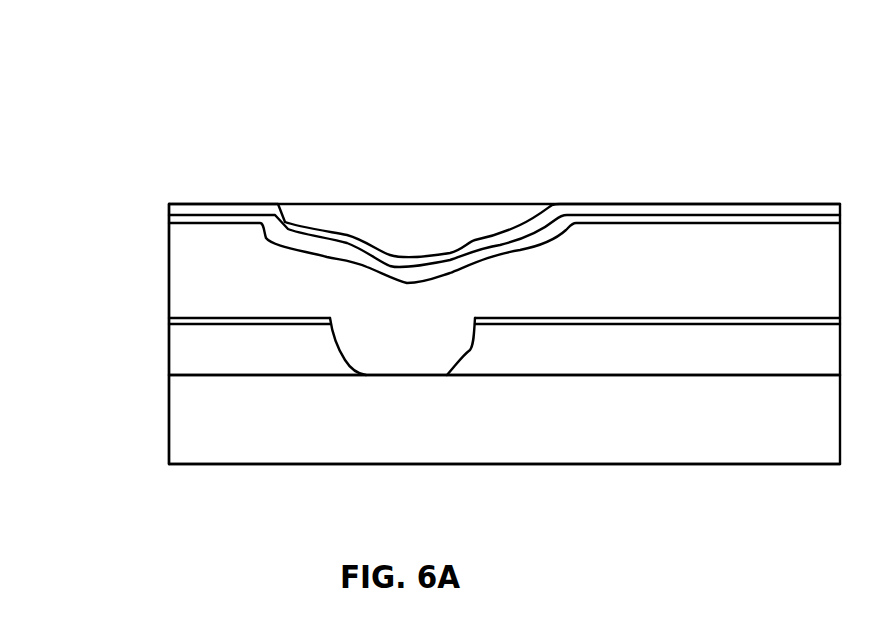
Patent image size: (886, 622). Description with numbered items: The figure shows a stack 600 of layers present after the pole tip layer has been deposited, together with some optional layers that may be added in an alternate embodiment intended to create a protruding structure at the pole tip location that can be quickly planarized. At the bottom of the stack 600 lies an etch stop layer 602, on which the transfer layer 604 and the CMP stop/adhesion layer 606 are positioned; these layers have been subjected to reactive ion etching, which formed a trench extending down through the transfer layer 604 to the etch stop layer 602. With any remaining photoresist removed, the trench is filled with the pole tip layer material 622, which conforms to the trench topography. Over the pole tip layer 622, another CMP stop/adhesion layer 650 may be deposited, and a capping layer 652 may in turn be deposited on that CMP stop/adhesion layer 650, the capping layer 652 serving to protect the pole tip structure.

The stack 600 is at (700, 148).
The etch stop layer 602 is at (169, 410).
The transfer layer 604 is at (169, 352).
The CMP stop/adhesion layer 606 is at (169, 320).
The pole tip layer material 622 is at (167, 267).
The CMP stop/adhesion layer 650 is at (278, 232).
The capping layer 652 is at (302, 221).